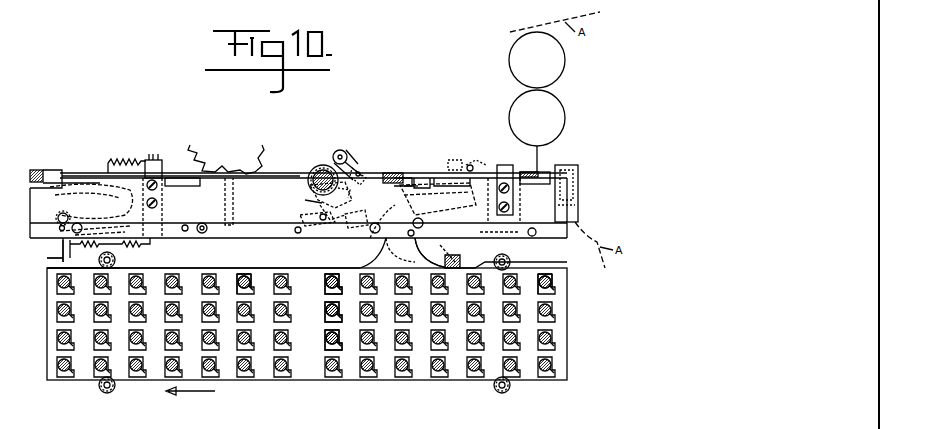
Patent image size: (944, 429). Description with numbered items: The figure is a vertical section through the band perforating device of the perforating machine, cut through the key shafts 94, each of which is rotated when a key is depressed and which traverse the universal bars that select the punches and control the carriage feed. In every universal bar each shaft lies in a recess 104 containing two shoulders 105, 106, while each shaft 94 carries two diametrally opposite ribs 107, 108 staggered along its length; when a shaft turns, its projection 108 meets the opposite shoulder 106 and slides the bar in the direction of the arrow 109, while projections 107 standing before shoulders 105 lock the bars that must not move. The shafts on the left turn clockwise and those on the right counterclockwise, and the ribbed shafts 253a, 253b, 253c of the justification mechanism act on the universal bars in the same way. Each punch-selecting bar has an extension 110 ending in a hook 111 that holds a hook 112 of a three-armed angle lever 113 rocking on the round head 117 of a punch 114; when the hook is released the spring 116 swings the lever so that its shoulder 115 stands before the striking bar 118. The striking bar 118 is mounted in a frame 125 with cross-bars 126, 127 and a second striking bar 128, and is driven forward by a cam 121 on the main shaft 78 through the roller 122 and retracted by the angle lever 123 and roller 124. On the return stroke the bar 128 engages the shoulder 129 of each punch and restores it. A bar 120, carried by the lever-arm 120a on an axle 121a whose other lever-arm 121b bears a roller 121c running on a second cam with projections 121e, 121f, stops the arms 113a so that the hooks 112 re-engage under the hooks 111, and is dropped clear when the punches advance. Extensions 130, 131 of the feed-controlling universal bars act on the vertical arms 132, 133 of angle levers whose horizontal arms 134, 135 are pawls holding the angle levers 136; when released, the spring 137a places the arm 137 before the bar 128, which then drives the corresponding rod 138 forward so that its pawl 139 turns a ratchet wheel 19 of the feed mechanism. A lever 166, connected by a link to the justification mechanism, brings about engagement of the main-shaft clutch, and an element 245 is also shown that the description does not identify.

The ratchet wheel 19 is at (232, 152).
The main shaft 78 is at (316, 170).
The shaft 94 is at (541, 284).
The recess 104 is at (556, 287).
The shoulder 105 is at (551, 293).
The shoulder 106 is at (547, 277).
The projection 107 is at (540, 290).
The projection 108 is at (553, 280).
The arrow 109 is at (190, 398).
The extension 110 is at (448, 259).
The hook 111 is at (417, 180).
The hook 112 is at (418, 203).
The angle lever 113 is at (446, 178).
The arm 113a is at (456, 160).
The punch 114 is at (572, 168).
The extension 115 is at (420, 178).
The spring 116 is at (501, 165).
The round head 117 is at (480, 165).
The striking bar 118 is at (403, 176).
The bar 120 is at (490, 234).
The lever-arm 120a is at (470, 250).
The cam 121 is at (322, 203).
The axle 121a is at (342, 192).
The lever-arm 121b is at (393, 226).
The roller 121c is at (338, 151).
The projection 121e is at (362, 166).
The projection 121f is at (320, 203).
The roller 122 is at (386, 174).
The angle lever 123 is at (353, 226).
The roller 124 is at (318, 222).
The frame 125 is at (263, 173).
The cross-bar 126 is at (530, 176).
The cross-bar 127 is at (175, 173).
The striking bar 128 is at (36, 170).
The shoulder 129 is at (525, 172).
The extension 130 is at (50, 266).
The extension 131 is at (50, 256).
The vertical arm 132 is at (116, 260).
The vertical arm 133 is at (63, 244).
The horizontal arm 134 is at (110, 227).
The horizontal arm 135 is at (70, 206).
The angle lever 136 is at (118, 212).
The horizontal arm 137 is at (87, 182).
The spring 137a is at (137, 160).
The rod 138 is at (252, 190).
The pawl 139 is at (240, 186).
The lever 166 is at (420, 258).
The pressure roller 245 is at (545, 118).
The shaft 253a is at (327, 341).
The shaft 253b is at (327, 313).
The shaft 253c is at (327, 285).